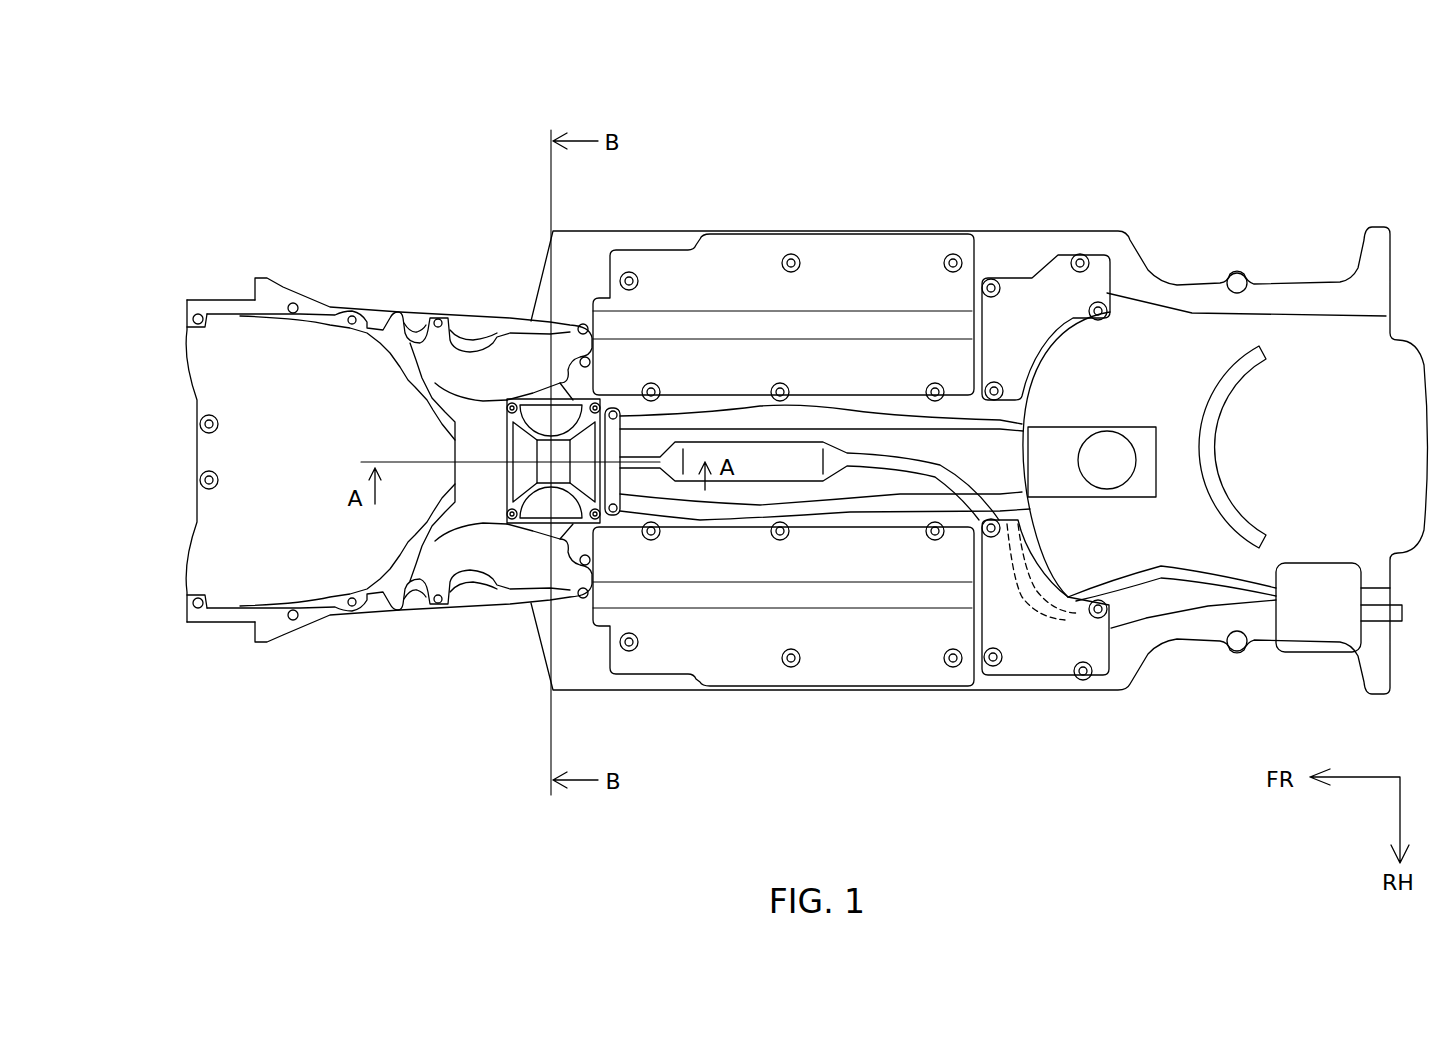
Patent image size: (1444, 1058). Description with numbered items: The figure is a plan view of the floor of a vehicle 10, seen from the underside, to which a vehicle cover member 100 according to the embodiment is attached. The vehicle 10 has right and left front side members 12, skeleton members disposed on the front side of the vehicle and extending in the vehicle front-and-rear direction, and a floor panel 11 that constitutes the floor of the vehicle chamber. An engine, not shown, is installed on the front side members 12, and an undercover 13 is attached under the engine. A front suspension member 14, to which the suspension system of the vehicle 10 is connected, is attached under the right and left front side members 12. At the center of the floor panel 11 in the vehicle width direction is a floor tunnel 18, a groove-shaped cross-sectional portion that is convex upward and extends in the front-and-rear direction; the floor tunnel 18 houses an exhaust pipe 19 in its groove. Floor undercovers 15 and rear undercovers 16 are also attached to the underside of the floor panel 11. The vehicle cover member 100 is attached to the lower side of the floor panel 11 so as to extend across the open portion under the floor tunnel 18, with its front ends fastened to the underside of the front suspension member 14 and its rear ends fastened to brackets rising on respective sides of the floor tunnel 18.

The vehicle 10 is at (226, 128).
The floor panel 11 is at (640, 227).
The front side members 12 is at (370, 282).
The undercover 13 is at (203, 562).
The front suspension member 14 is at (517, 568).
The floor undercovers 15 is at (857, 255).
The rear undercovers 16 is at (1057, 285).
The floor tunnel 18 is at (935, 448).
The exhaust pipe 19 is at (806, 483).
The vehicle cover member 100 is at (500, 495).